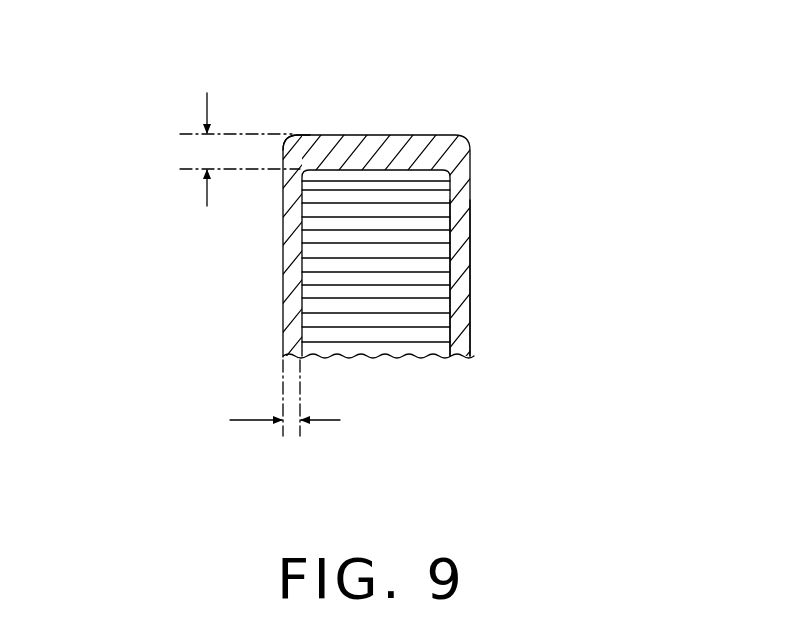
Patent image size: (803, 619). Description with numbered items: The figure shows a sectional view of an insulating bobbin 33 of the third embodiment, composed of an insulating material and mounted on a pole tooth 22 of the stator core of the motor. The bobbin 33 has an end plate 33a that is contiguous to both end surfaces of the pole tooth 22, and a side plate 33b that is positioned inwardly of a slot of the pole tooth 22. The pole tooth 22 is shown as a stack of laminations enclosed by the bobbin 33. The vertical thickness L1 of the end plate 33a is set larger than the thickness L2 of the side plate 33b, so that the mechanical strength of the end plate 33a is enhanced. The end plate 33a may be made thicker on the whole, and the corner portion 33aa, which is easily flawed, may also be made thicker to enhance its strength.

The insulating bobbin 33 is at (382, 207).
The end plate 33a is at (405, 135).
The corner portion 33aa is at (301, 148).
The side plate 33b is at (470, 260).
The pole tooth 22 is at (400, 317).
The thickness of end plate L1 is at (208, 151).
The thickness of side plate L2 is at (290, 427).